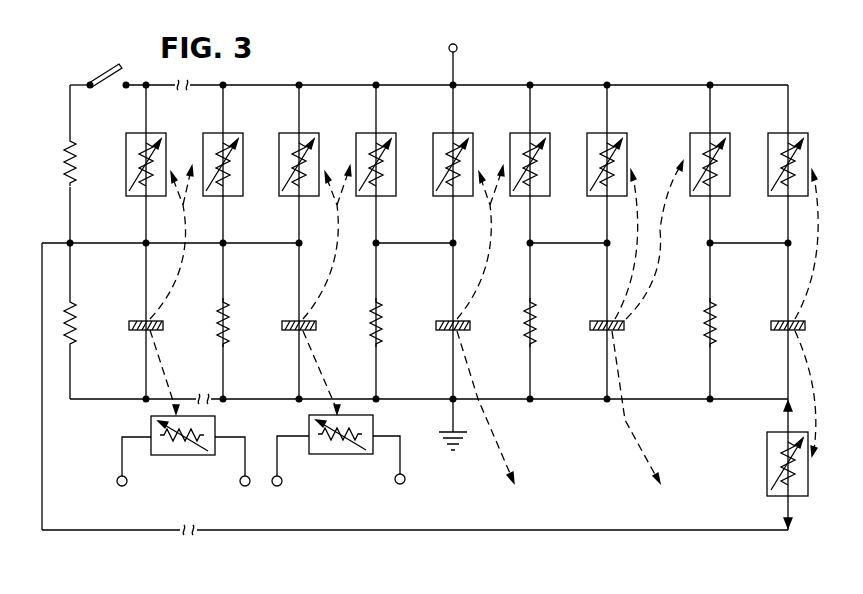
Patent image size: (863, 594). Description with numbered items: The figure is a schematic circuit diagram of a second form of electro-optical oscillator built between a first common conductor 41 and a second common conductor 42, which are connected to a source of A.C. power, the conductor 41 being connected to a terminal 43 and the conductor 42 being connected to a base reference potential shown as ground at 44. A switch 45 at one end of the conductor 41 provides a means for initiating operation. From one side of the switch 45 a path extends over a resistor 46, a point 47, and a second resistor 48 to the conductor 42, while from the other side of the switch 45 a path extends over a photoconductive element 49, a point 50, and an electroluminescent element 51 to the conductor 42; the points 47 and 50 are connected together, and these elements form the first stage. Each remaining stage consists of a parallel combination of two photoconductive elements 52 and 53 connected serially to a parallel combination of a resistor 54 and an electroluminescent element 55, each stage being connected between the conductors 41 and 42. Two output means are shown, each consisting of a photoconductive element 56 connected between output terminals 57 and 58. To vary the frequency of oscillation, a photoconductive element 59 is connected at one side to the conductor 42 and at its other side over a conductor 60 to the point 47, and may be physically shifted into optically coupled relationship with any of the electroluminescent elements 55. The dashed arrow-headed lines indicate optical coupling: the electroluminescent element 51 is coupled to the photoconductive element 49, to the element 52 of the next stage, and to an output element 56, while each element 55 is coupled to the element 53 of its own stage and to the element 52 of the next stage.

The first common conductor 41 is at (565, 84).
The second common conductor 42 is at (564, 402).
The terminal 43 is at (448, 48).
The ground 44 is at (450, 402).
The switch 45 is at (98, 76).
The resistor 46 is at (64, 166).
The point 47 is at (68, 242).
The second resistor 48 is at (76, 348).
The photoconductive element 49 is at (132, 132).
The point 50 is at (146, 246).
The electroluminescent element 51 is at (130, 321).
The photoconductive element 52 is at (229, 132).
The photoconductive element 53 is at (305, 132).
The resistor 54 is at (230, 318).
The electroluminescent element 55 is at (291, 332).
The photoconductive element 56 is at (177, 455).
The output terminal 57 is at (126, 486).
The output terminal 58 is at (243, 486).
The photoconductive element 59 is at (765, 468).
The conductor 60 is at (552, 532).